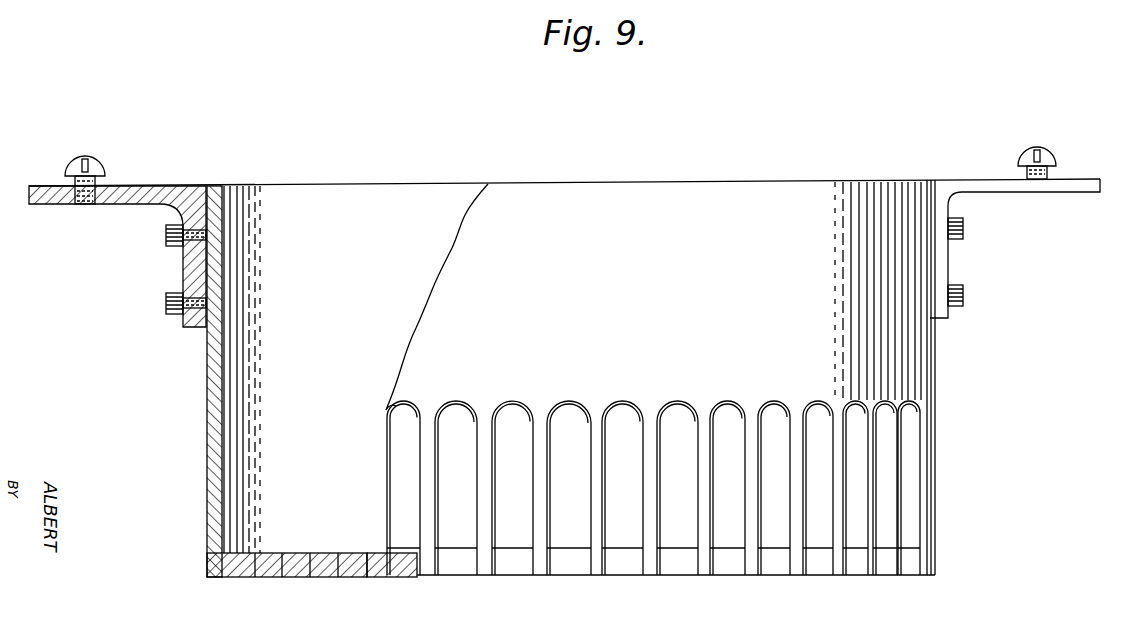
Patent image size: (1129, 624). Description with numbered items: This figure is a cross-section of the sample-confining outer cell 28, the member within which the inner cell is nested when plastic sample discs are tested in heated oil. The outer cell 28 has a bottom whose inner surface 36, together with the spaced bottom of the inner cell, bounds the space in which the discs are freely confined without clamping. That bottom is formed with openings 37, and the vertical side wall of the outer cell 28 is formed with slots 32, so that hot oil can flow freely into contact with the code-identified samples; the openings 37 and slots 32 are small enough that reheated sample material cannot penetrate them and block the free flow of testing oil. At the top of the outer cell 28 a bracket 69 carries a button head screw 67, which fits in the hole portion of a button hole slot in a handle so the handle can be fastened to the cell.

The outer cell 28 is at (923, 358).
The slots 32 is at (505, 470).
The bottom inner surface 36 is at (401, 578).
The openings 37 is at (360, 578).
The button head screw 67 is at (97, 160).
The bracket 69 is at (157, 188).